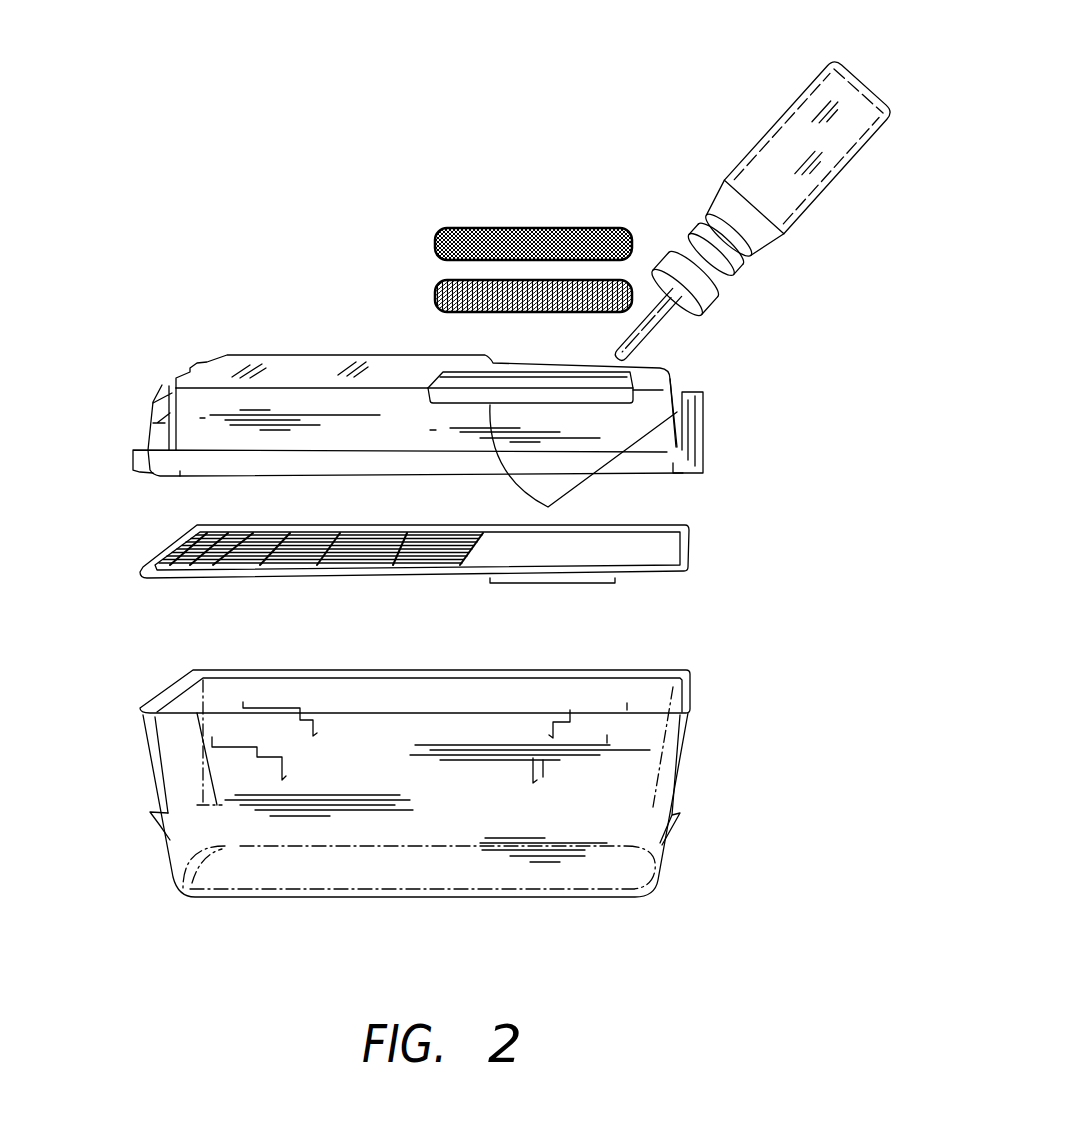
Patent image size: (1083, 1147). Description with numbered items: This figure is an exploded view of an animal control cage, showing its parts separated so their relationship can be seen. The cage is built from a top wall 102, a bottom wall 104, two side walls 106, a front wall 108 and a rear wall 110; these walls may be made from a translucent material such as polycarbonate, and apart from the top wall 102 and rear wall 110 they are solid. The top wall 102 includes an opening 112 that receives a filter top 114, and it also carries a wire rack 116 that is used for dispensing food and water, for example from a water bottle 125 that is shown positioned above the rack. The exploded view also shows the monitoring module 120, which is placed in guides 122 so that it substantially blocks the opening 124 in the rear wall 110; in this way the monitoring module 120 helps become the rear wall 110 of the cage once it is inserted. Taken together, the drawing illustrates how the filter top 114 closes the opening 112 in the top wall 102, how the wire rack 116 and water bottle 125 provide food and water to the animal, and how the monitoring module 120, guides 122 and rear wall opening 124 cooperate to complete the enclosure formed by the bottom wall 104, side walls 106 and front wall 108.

The top wall 102 is at (290, 375).
The bottom wall 104 is at (507, 877).
The side walls 106 is at (378, 778).
The front wall 108 is at (672, 815).
The rear wall 110 is at (150, 812).
The opening 112 is at (640, 367).
The filter top 114 is at (515, 227).
The wire rack 116 is at (473, 578).
The monitoring module 120 is at (163, 425).
The guides 122 is at (145, 778).
The opening 124 is at (170, 687).
The water bottle 125 is at (785, 108).